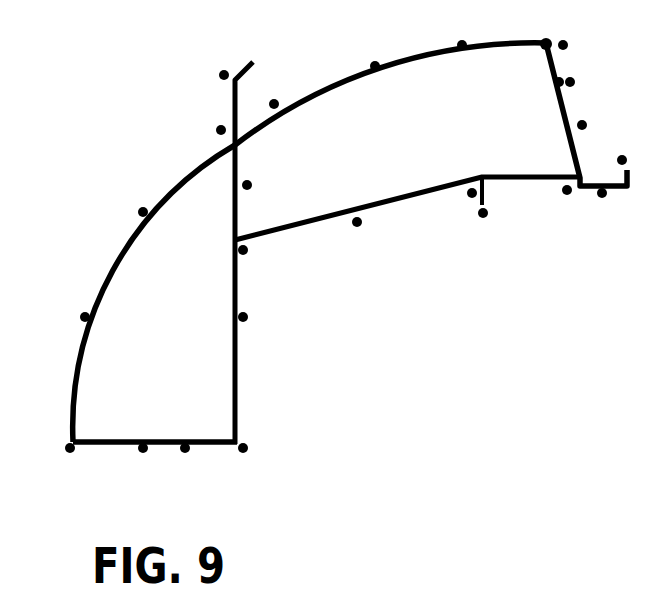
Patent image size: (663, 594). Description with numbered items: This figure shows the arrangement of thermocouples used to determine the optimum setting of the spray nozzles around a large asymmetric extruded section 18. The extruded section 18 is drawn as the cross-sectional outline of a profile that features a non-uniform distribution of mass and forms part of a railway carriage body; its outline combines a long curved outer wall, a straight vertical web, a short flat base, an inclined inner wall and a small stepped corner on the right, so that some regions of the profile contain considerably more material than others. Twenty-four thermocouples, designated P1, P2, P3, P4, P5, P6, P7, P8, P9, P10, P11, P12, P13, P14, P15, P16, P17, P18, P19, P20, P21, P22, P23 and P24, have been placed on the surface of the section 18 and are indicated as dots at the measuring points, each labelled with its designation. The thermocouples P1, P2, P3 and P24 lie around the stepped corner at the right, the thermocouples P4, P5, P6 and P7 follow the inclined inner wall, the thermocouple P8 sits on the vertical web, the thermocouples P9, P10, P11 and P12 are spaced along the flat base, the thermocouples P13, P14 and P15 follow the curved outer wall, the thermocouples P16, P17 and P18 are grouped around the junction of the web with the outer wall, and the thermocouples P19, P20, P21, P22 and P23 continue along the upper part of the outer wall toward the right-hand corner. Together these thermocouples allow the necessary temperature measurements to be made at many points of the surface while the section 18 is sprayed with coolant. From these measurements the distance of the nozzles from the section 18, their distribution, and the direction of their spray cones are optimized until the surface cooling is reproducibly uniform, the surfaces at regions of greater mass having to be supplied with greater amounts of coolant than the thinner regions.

The extruded section 18 is at (273, 398).
The thermocouple P1 is at (626, 145).
The thermocouple P2 is at (602, 208).
The thermocouple P3 is at (551, 199).
The thermocouple P4 is at (468, 226).
The thermocouple P5 is at (457, 204).
The thermocouple P6 is at (357, 237).
The thermocouple P7 is at (263, 252).
The thermocouple P8 is at (260, 319).
The thermocouple P9 is at (240, 464).
The thermocouple P10 is at (190, 464).
The thermocouple P11 is at (132, 464).
The thermocouple P12 is at (67, 464).
The thermocouple P13 is at (57, 319).
The thermocouple P14 is at (115, 213).
The thermocouple P15 is at (194, 131).
The thermocouple P16 is at (197, 74).
The thermocouple P17 is at (277, 89).
The thermocouple P18 is at (266, 170).
The thermocouple P19 is at (375, 52).
The thermocouple P20 is at (461, 29).
The thermocouple P21 is at (542, 27).
The thermocouple P22 is at (589, 41).
The thermocouple P23 is at (590, 79).
The thermocouple P24 is at (608, 114).